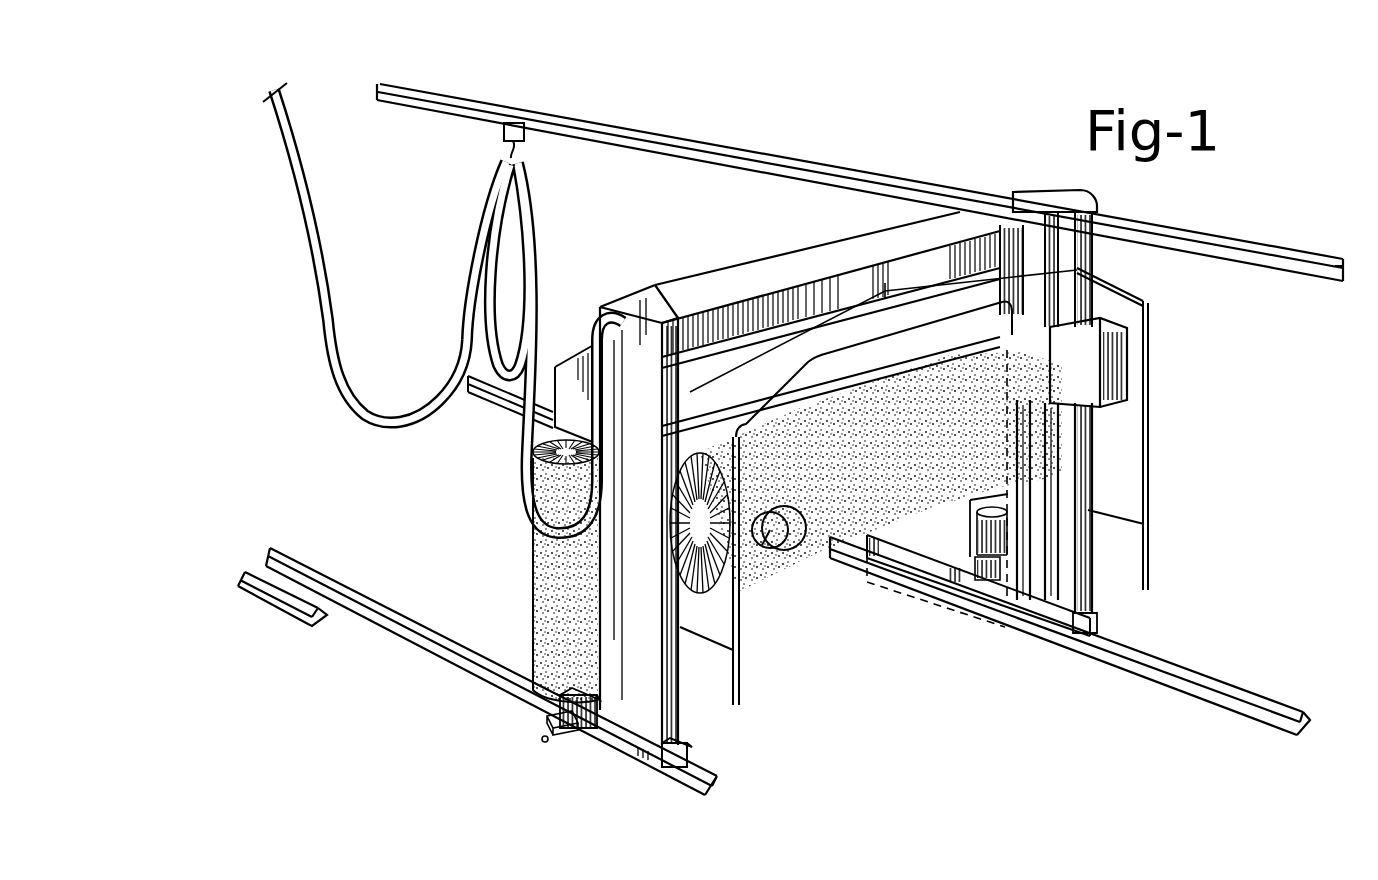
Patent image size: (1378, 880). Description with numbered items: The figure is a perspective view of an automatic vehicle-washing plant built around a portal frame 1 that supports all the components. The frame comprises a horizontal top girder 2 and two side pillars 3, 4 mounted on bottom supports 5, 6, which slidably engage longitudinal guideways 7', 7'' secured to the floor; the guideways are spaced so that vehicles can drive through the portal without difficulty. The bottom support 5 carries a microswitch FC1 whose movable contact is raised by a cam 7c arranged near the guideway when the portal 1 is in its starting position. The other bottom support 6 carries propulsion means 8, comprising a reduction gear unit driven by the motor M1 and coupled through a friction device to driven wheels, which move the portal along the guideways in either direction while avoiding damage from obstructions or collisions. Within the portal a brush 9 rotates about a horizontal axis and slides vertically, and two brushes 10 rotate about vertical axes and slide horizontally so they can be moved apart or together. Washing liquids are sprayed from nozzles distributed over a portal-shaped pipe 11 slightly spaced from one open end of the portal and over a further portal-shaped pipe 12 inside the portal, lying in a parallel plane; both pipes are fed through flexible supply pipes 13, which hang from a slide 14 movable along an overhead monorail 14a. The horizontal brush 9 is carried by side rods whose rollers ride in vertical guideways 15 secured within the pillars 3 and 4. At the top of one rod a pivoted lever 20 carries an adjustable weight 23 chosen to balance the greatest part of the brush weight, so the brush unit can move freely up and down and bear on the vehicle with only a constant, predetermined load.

The portal frame 1 is at (624, 284).
The top girder 2 is at (772, 268).
The side pillar 3 is at (653, 705).
The side pillar 4 is at (1095, 573).
The bottom support 5 is at (586, 730).
The bottom support 6 is at (1005, 596).
The longitudinal guideway 7' is at (504, 671).
The longitudinal guideway 7'' is at (1070, 636).
The cam 7c is at (273, 598).
The propulsion means 8 is at (958, 561).
The brush 9 is at (820, 552).
The brushes 10 is at (548, 592).
The pipe 11 is at (740, 633).
The pipe 12 is at (807, 330).
The flexible supply pipes 13 is at (533, 214).
The slide 14 is at (504, 132).
The overhead monorail 14a is at (800, 175).
The vertical guideways 15 is at (1012, 602).
The lever 20 is at (797, 556).
The adjustable weight 23 is at (767, 550).
The motor M1 is at (1010, 548).
The microswitch FC1 is at (547, 722).